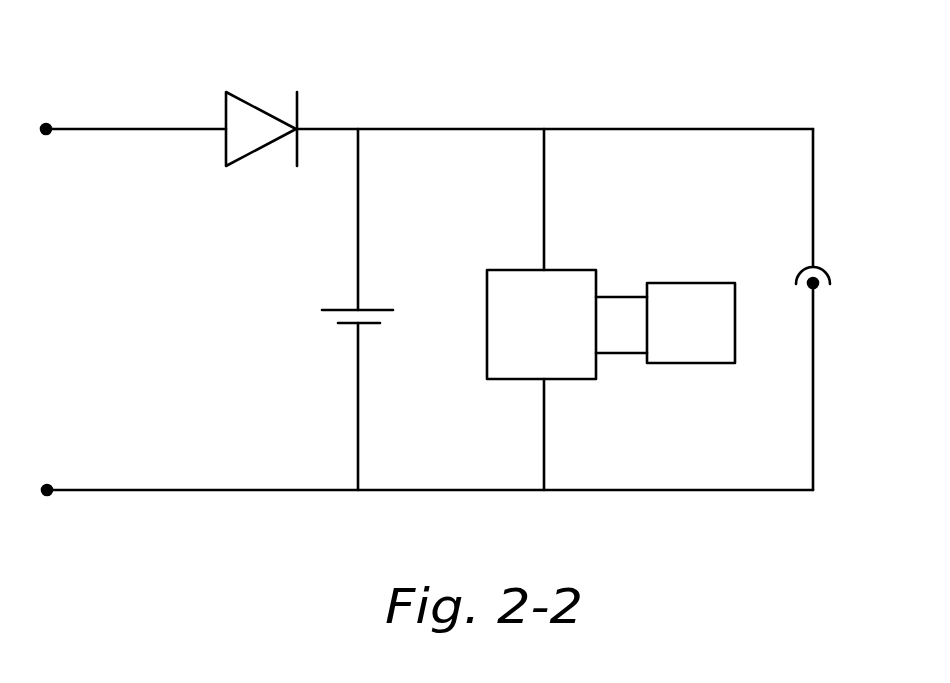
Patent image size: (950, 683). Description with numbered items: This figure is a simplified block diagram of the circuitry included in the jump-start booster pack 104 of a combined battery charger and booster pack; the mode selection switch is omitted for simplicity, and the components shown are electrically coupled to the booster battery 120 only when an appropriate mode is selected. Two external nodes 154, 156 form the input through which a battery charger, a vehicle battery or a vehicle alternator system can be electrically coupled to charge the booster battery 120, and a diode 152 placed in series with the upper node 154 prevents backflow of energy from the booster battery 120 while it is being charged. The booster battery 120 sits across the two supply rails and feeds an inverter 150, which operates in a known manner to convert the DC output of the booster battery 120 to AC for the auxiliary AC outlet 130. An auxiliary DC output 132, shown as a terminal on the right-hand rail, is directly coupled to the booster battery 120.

The jump-start booster pack 104 is at (492, 80).
The node 154 is at (46, 128).
The diode 152 is at (262, 111).
The booster battery 120 is at (318, 342).
The inverter 150 is at (519, 370).
The auxiliary AC outlet 130 is at (674, 348).
The auxiliary DC output 132 is at (826, 298).
The node 156 is at (44, 495).